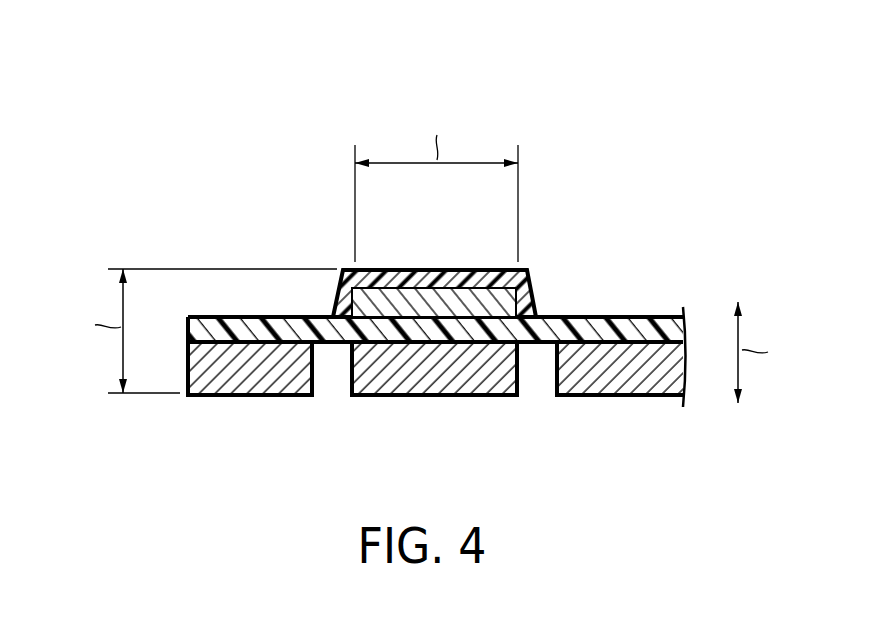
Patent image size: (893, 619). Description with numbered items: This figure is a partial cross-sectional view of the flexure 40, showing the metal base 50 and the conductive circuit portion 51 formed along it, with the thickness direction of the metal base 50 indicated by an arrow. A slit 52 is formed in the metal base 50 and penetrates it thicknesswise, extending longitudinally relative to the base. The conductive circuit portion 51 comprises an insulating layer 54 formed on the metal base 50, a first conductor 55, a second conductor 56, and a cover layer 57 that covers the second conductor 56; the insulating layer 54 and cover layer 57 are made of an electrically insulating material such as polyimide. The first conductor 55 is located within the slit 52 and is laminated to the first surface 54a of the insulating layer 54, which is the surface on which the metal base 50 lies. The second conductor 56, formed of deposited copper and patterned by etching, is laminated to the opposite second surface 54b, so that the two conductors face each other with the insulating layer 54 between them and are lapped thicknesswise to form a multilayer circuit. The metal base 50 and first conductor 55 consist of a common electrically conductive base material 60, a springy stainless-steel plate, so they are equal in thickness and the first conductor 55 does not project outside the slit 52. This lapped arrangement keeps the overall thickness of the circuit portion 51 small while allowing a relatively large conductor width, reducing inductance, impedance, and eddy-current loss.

The flexure 40 is at (429, 255).
The metal base 50 is at (252, 373).
The conductive circuit portion 51 is at (380, 238).
The slit 52 is at (314, 367).
The insulating layer 54 is at (435, 327).
The first surface 54a is at (388, 344).
The second surface 54b is at (435, 317).
The first conductor 55 is at (467, 375).
The second conductor 56 is at (485, 297).
The cover layer 57 is at (386, 268).
The base material 60 is at (628, 375).